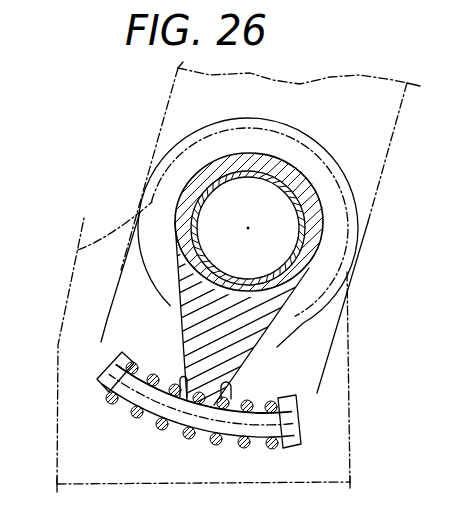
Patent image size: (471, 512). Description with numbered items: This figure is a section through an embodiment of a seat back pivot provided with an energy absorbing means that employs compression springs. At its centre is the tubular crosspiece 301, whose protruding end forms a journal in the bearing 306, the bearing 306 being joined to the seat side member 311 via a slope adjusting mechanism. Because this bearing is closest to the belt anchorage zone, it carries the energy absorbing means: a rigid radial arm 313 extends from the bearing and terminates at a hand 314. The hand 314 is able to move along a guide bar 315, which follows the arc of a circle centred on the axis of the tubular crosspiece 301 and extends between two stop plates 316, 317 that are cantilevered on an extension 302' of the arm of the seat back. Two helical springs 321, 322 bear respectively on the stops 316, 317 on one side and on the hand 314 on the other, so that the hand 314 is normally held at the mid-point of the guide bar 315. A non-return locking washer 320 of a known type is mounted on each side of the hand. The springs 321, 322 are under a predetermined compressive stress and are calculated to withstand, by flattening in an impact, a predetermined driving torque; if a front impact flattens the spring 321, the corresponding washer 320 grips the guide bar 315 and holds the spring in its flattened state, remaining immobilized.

The tubular crosspiece 301 is at (228, 180).
The bearing 306 is at (273, 158).
The seat side member 311 is at (82, 256).
The rigid radial arm 313 is at (181, 324).
The guide bar 315 is at (182, 381).
The stop plate 316 is at (104, 360).
The stop plate 317 is at (299, 398).
The extension of the arm 302' is at (238, 277).
The hand 314 is at (190, 438).
The non-return locking washer 320 is at (165, 433).
The helical spring 321 is at (131, 416).
The helical spring 322 is at (247, 404).